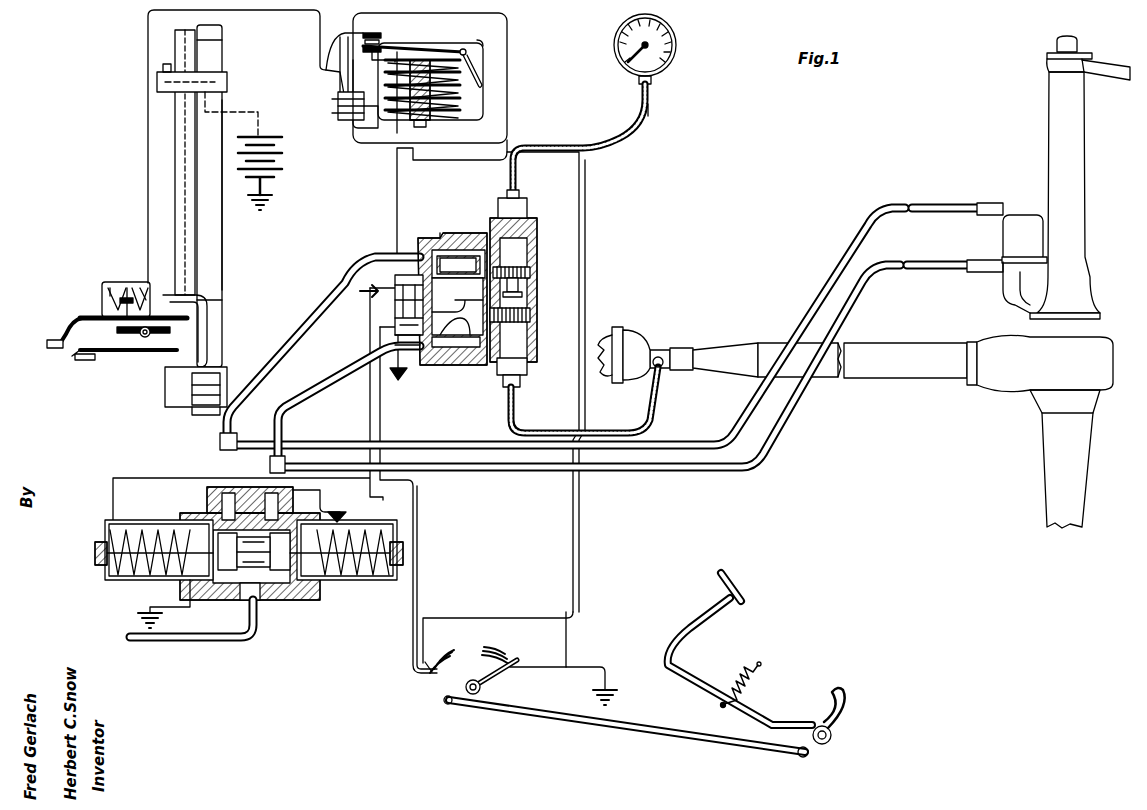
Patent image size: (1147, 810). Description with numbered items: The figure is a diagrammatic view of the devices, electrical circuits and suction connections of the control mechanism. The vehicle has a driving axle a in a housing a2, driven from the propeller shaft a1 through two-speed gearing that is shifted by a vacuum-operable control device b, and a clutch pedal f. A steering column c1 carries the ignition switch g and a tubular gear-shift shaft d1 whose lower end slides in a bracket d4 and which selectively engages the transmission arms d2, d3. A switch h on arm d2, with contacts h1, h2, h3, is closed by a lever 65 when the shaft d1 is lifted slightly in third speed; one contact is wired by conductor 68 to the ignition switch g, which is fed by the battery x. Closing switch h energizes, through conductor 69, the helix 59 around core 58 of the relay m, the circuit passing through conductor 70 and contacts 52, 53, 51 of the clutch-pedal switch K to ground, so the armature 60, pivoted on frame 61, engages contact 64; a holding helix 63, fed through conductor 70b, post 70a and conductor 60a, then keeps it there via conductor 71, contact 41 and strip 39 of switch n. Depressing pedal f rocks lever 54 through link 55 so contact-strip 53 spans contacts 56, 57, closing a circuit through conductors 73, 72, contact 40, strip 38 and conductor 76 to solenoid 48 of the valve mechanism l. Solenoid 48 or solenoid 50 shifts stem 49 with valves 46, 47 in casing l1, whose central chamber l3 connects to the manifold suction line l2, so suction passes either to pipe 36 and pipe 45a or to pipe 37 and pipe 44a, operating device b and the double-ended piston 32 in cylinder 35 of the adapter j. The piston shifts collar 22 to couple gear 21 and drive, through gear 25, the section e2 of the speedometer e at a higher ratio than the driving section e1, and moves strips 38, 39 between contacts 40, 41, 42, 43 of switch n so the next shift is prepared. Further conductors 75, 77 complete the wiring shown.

The conductor 69 is at (148, 40).
The conductor 71 is at (397, 207).
The conductor 72 is at (415, 536).
The conductor 73 is at (580, 541).
The conductor 75 is at (450, 66).
The conductor 76 is at (370, 414).
The conductor 77 is at (381, 428).
The pipe 44a is at (360, 262).
The pipe 45a is at (765, 450).
The suction pipe 37 is at (310, 318).
The suction pipe 36 is at (335, 382).
The steering column c1 is at (223, 43).
The tubular shaft d1 is at (175, 122).
The ignition switch g is at (157, 82).
The battery x is at (262, 161).
The conductor 68 is at (183, 275).
The bracket d4 is at (210, 318).
The switch h is at (102, 300).
The contact h1 is at (111, 286).
The contact h2 is at (141, 284).
The contact h3 is at (127, 288).
The arm d2 is at (62, 326).
The arm d3 is at (108, 358).
The lever 65 is at (147, 338).
The relay switch m is at (430, 72).
The armature 60 is at (415, 48).
The conductor 60a is at (482, 40).
The post 70a is at (338, 110).
The conductor 70b is at (320, 70).
The helix 63 is at (378, 108).
The contact 64 is at (385, 38).
The frame 61 is at (462, 98).
The helix 59 is at (430, 113).
The core 58 is at (430, 128).
The speedometer e is at (653, 49).
The speedometer drive-shaft section e2 is at (648, 110).
The conductor 70 is at (579, 142).
The speedometer drive-shaft section e1 is at (660, 388).
The adapter j is at (488, 288).
The collar 22 is at (455, 235).
The cylinder 35 is at (458, 265).
The lower contact 43 is at (457, 312).
The gear 25 is at (535, 265).
The gear 21 is at (530, 318).
The double-ended piston 32 is at (455, 347).
The switch n is at (360, 290).
The central contact 41 is at (403, 296).
The central contact 40 is at (400, 308).
The contact-strip 38 is at (397, 333).
The contact-strip 39 is at (395, 346).
The lower contact 42 is at (395, 340).
The driving axle a is at (1057, 47).
The propeller shaft a1 is at (627, 347).
The axle housing a2 is at (881, 431).
The vacuum-operable control device b is at (1003, 240).
The valve mechanism l is at (249, 550).
The valve 46 is at (300, 518).
The valve 47 is at (215, 598).
The solenoid 48 is at (372, 581).
The stem 49 is at (305, 600).
The solenoid 50 is at (125, 581).
The casing l1 is at (290, 600).
The suction line l2 is at (247, 641).
The central chamber l3 is at (263, 600).
The switch K is at (471, 625).
The contact 51 is at (500, 648).
The contact 52 is at (493, 645).
The contact-strip 53 is at (514, 663).
The pivoted lever 54 is at (485, 684).
The link 55 is at (688, 732).
The contact 56 is at (450, 640).
The contact 57 is at (437, 674).
The clutch pedal f is at (700, 683).